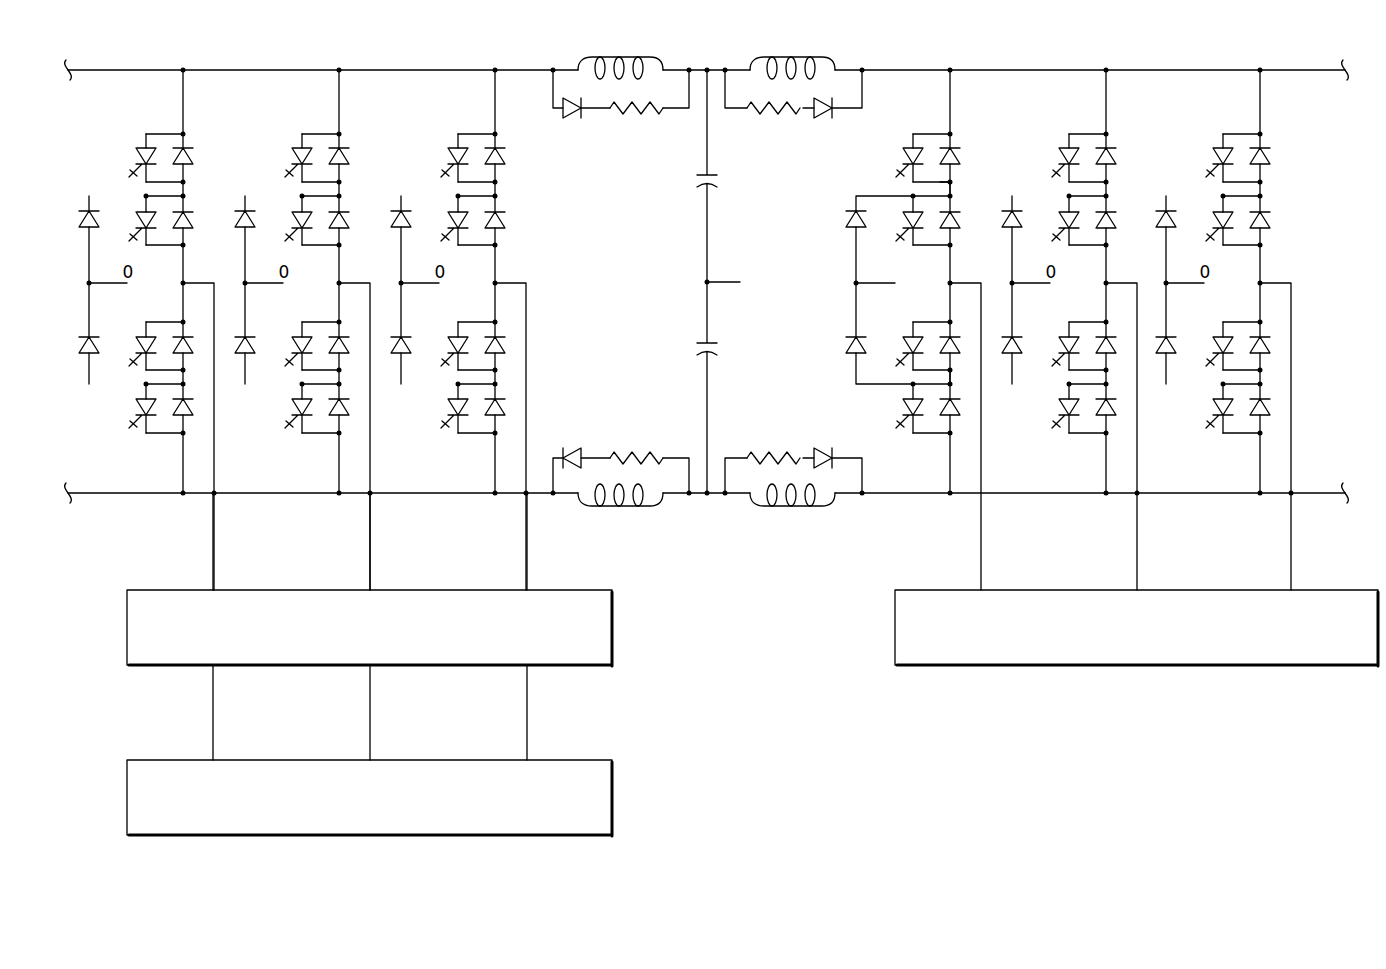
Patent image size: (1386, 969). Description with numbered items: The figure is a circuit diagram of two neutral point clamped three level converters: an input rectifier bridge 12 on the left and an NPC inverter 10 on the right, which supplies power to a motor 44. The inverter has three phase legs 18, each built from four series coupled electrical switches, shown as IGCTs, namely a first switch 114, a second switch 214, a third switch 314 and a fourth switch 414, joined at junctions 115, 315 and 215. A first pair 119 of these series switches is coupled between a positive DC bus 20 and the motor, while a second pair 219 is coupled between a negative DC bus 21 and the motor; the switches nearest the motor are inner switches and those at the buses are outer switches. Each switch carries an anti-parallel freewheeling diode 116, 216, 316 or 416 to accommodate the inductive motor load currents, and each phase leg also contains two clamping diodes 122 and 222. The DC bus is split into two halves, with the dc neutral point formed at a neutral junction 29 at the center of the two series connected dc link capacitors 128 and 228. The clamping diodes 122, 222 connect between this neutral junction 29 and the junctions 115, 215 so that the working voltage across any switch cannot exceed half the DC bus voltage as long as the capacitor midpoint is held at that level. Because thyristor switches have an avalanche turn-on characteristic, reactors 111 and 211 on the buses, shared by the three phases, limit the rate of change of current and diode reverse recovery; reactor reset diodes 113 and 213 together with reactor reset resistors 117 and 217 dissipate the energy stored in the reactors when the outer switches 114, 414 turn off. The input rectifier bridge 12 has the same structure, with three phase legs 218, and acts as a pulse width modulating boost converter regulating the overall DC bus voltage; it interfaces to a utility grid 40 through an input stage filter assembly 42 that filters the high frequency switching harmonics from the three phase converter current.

The NPC inverter 10 is at (1302, 65).
The input rectifier bridge 12 is at (496, 69).
The phase leg 18 is at (953, 71).
The positive DC bus 20 is at (1075, 70).
The negative DC bus 21 is at (960, 496).
The neutral junction 29 is at (705, 281).
The utility grid 40 is at (614, 792).
The input stage filter assembly 42 is at (614, 622).
The motor 44 is at (895, 620).
The reactor 111 is at (835, 66).
The reactor reset diode 113 is at (832, 110).
The first switch 114 is at (906, 162).
The junction 115 is at (962, 178).
The freewheeling diode 116 is at (960, 157).
The reactor reset resistor 117 is at (752, 110).
The first pair 119 is at (918, 152).
The clamping diode 122 is at (850, 220).
The dc link capacitor 128 is at (700, 192).
The reactor 211 is at (790, 508).
The reactor reset diode 213 is at (830, 452).
The second switch 214 is at (905, 226).
The junction 215 is at (952, 374).
The freewheeling diode 216 is at (960, 224).
The reactor reset resistor 217 is at (752, 453).
The phase leg 218 is at (186, 68).
The second pair 219 is at (930, 343).
The clamping diode 222 is at (850, 346).
The dc link capacitor 228 is at (700, 340).
The third switch 314 is at (910, 328).
The junction 315 is at (952, 284).
The freewheeling diode 316 is at (960, 349).
The fourth switch 414 is at (906, 408).
The freewheeling diode 416 is at (958, 412).